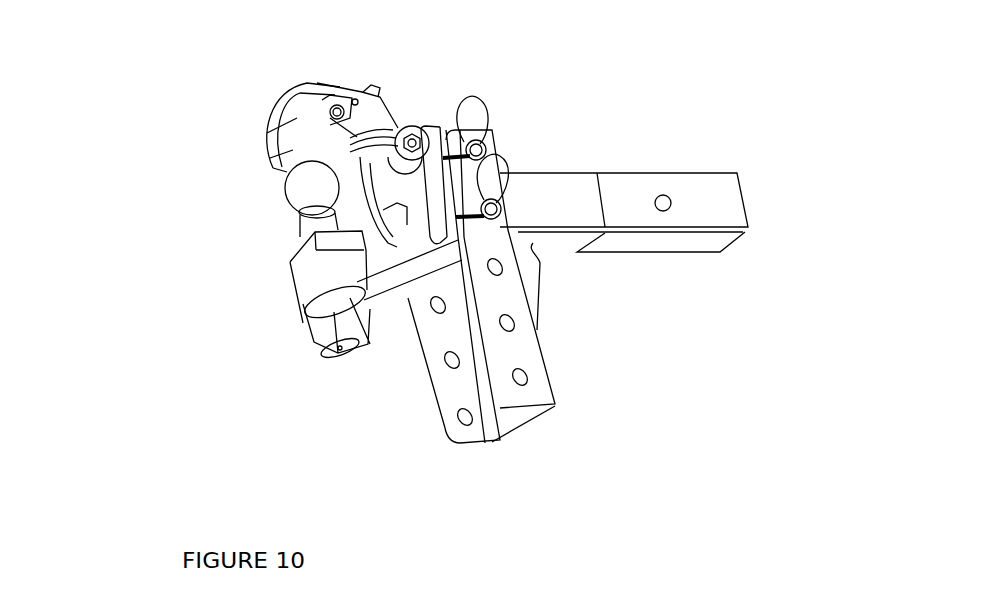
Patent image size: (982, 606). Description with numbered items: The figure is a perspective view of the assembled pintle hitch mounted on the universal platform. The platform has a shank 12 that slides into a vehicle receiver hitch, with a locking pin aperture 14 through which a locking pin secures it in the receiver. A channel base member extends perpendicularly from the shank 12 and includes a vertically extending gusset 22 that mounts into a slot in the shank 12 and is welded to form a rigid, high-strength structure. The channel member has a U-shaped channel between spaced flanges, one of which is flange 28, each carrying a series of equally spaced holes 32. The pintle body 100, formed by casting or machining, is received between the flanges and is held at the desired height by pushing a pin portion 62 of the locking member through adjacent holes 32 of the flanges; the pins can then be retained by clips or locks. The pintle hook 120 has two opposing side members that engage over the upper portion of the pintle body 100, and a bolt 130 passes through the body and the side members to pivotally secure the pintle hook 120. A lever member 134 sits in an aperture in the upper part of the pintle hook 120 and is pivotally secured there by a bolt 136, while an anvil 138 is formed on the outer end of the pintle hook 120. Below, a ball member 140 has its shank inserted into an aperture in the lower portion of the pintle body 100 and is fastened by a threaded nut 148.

The shank 12 is at (650, 173).
The locking pin aperture 14 is at (672, 202).
The vertically extending gusset 22 is at (539, 289).
The flange 28 is at (518, 400).
The holes 32 is at (513, 327).
The pin portion 62 is at (493, 130).
The pintle body 100 is at (430, 267).
The pintle hook 120 is at (272, 196).
The bolt 130 is at (422, 130).
The lever member 134 is at (418, 130).
The bolt 136 is at (332, 120).
The anvil 138 is at (282, 172).
The ball member 140 is at (282, 205).
The threaded nut 148 is at (318, 336).